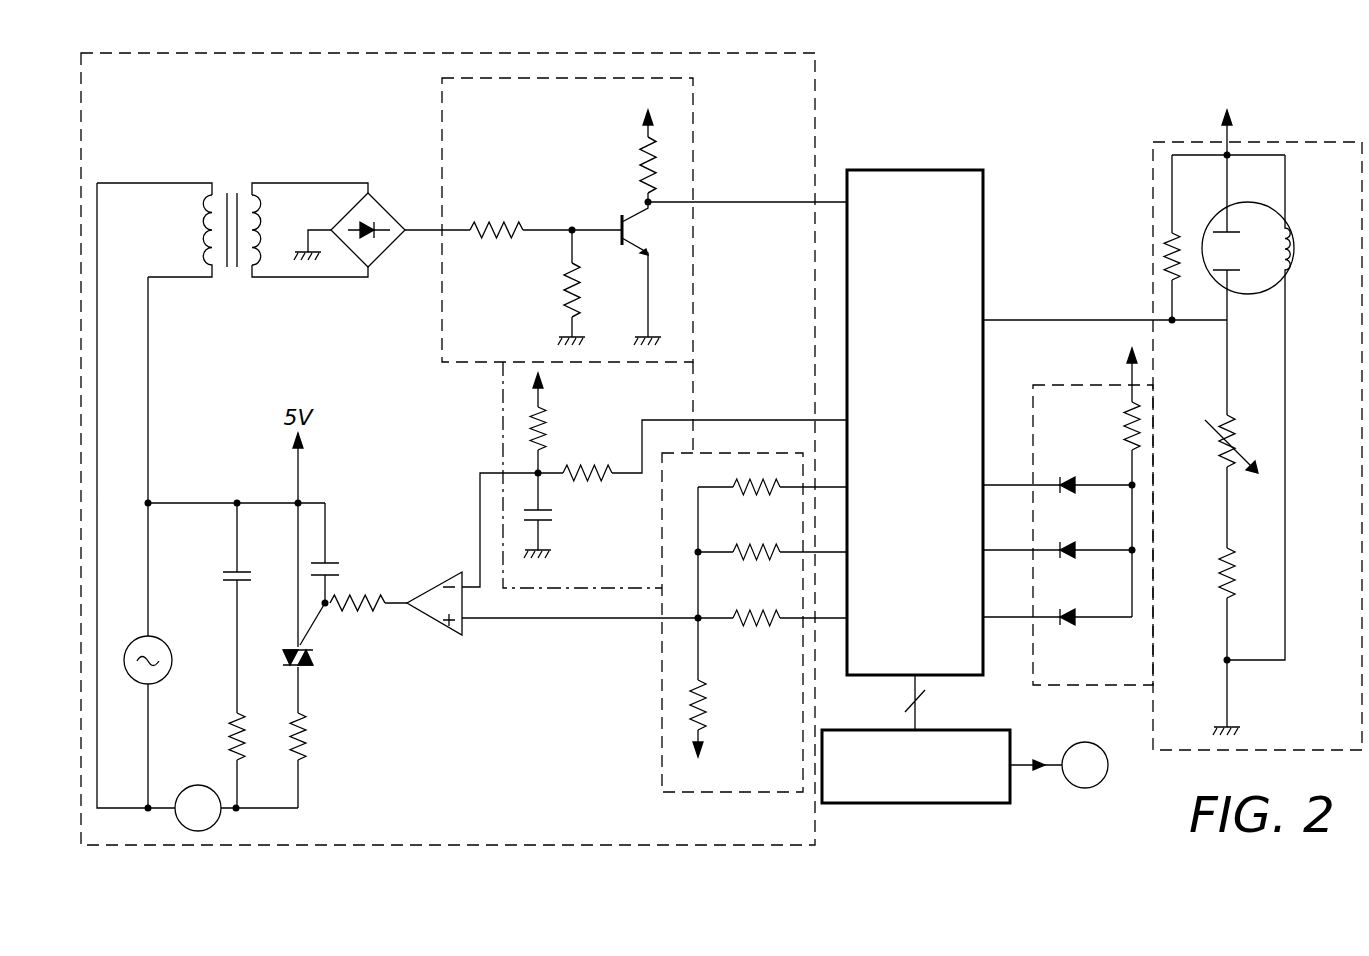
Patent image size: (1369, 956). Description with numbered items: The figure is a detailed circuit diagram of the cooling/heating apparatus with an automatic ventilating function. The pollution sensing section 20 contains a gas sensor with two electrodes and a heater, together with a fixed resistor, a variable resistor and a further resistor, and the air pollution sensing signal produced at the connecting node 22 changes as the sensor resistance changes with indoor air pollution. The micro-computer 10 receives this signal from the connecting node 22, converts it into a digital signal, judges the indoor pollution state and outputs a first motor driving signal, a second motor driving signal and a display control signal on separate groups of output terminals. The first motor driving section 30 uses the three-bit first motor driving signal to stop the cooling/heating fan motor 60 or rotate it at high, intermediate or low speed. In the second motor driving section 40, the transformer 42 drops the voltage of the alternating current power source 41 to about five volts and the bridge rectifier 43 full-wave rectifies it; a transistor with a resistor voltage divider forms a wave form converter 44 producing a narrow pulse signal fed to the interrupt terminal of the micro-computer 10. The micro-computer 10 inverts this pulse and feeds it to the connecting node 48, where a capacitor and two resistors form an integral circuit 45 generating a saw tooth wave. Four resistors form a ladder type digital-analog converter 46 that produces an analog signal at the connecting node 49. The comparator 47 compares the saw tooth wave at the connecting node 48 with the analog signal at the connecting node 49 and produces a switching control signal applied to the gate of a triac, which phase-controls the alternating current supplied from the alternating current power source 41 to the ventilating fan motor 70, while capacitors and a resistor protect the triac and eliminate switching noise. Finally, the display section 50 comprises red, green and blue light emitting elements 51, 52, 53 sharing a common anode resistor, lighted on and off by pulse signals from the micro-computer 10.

The micro-computer 10 is at (928, 170).
The pollution sensing section 20 is at (1243, 415).
The connecting node 22 is at (1172, 324).
The first motor driving section 30 is at (880, 730).
The second motor driving section 40 is at (778, 52).
The alternating current power source 41 is at (160, 638).
The transformer 42 is at (233, 190).
The bridge rectifier 43 is at (388, 212).
The wave form converter 44 is at (605, 265).
The integral circuit 45 is at (637, 475).
The ladder type digital-analog converter 46 is at (717, 623).
The comparator 47 is at (440, 578).
The connecting node 48 is at (492, 448).
The connecting node 49 is at (733, 649).
The display section 50 is at (1068, 501).
The red light emitting element 51 is at (1070, 478).
The green light emitting element 52 is at (1070, 543).
The blue light emitting element 53 is at (1070, 610).
The cooling/heating fan motor 60 is at (1075, 745).
The ventilating fan motor 70 is at (202, 785).